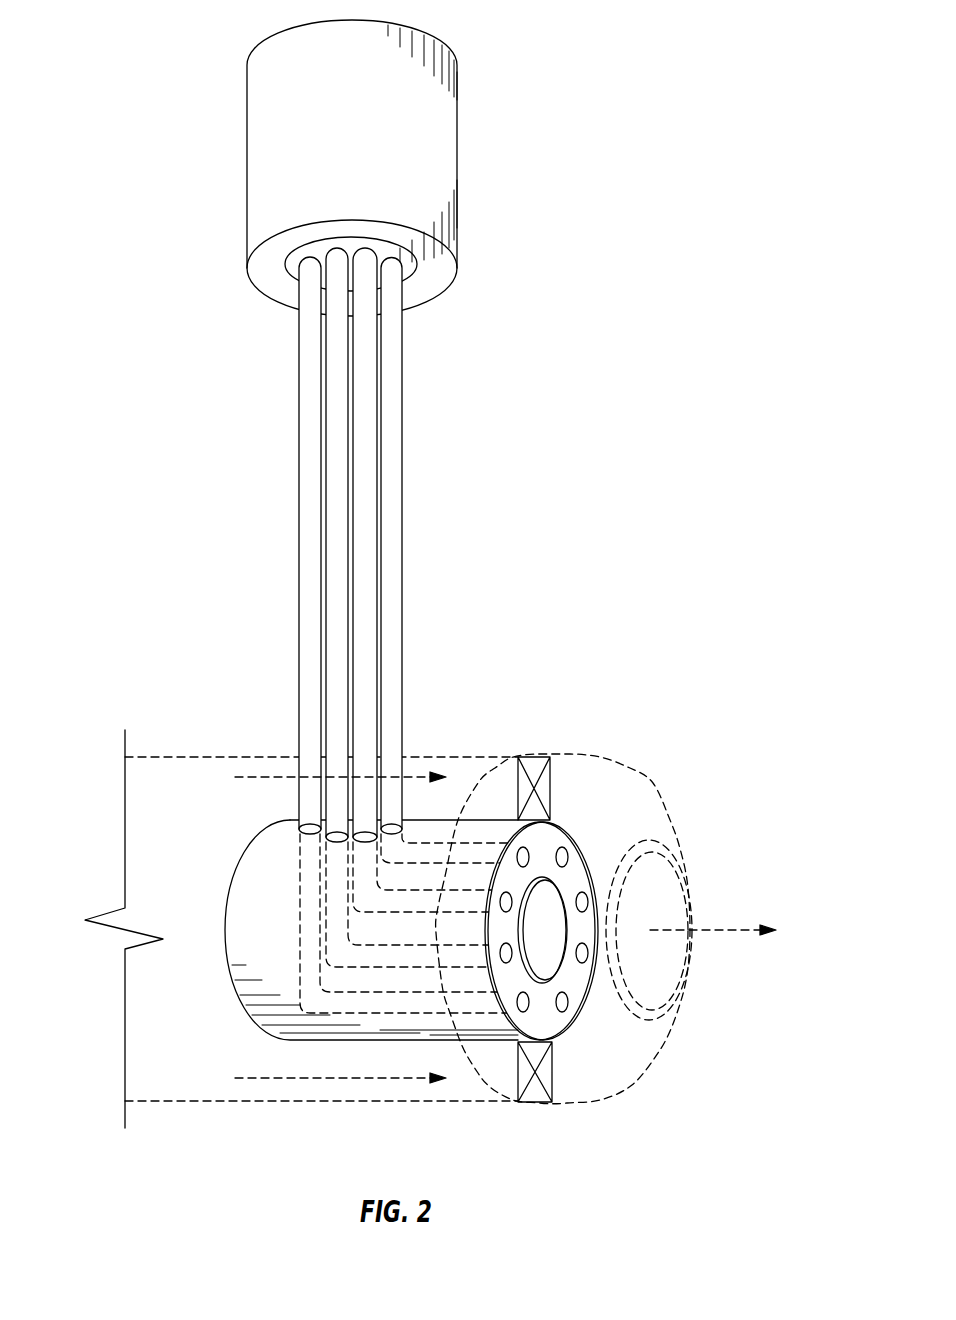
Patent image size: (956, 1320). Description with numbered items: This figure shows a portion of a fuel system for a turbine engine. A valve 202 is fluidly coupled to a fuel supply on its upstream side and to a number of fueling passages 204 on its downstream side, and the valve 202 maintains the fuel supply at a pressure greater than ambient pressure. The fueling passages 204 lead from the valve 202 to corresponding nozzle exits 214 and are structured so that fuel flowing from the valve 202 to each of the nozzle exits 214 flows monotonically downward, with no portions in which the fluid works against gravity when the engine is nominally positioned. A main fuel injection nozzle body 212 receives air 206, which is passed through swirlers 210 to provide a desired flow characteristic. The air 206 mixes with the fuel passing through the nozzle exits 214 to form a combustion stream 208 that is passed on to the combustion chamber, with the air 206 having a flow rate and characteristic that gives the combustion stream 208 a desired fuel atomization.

The valve 202 is at (247, 158).
The fueling passages 204 is at (403, 568).
The air 206 is at (238, 777).
The combustion stream 208 is at (720, 926).
The swirlers 210 is at (533, 763).
The main fuel injection nozzle body 212 is at (620, 772).
The nozzle exits 214 is at (567, 1004).